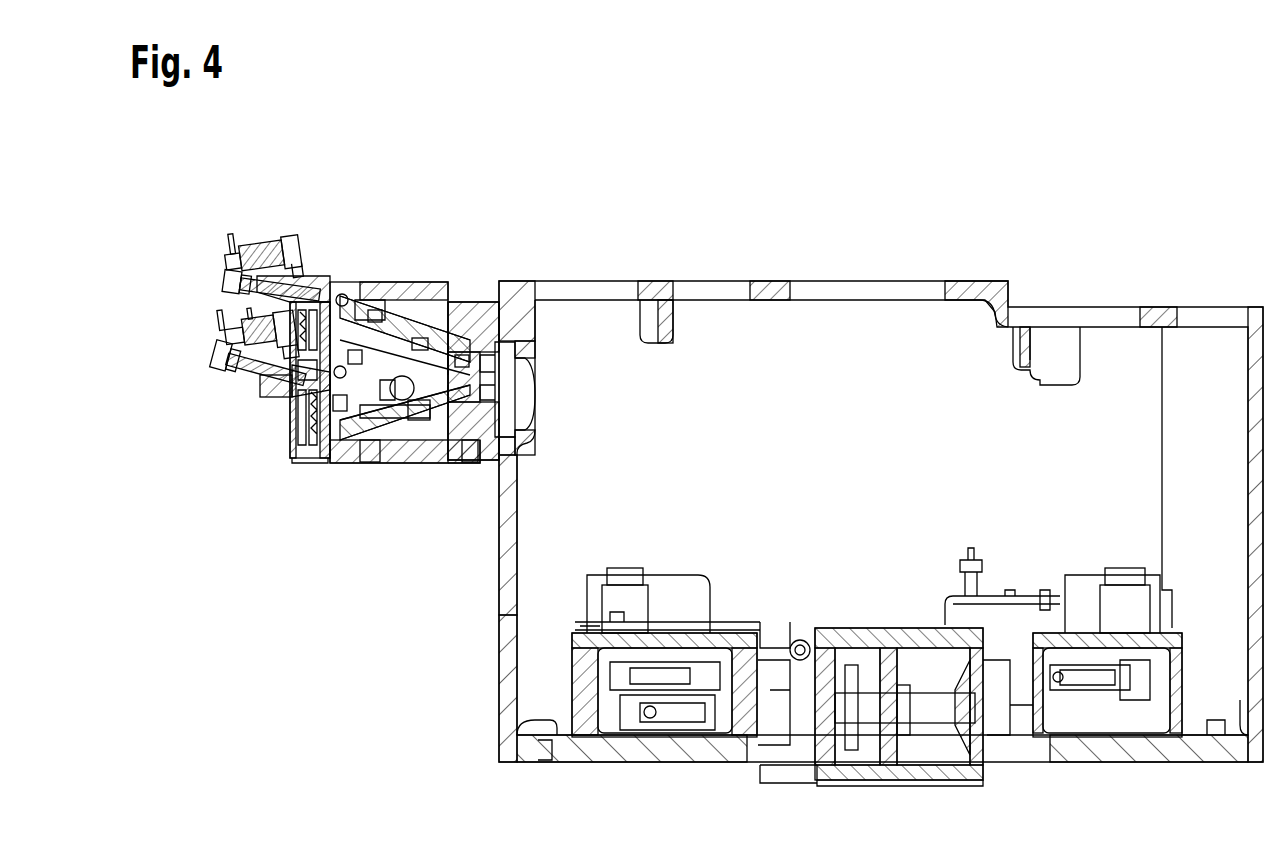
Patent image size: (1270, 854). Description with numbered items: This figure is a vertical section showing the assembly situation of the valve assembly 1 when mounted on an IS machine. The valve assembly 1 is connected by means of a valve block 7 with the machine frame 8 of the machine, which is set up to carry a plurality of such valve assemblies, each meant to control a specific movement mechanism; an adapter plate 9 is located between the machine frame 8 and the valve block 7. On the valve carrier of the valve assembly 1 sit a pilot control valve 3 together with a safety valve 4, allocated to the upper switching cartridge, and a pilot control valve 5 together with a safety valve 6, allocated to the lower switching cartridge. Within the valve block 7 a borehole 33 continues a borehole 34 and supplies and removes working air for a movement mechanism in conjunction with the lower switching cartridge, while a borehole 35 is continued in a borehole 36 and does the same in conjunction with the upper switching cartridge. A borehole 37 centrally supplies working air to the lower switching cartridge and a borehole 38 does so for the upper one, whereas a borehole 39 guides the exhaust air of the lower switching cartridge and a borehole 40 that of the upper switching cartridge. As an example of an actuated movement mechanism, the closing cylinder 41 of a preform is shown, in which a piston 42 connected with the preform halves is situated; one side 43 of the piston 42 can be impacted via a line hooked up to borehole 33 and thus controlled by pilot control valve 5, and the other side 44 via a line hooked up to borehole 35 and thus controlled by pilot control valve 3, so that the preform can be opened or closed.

The valve assembly 1 is at (297, 462).
The pilot control valve 3 is at (228, 247).
The safety valve 4 is at (212, 284).
The pilot control valve 5 is at (220, 327).
The safety valve 6 is at (212, 388).
The valve block 7 is at (397, 466).
The machine frame 8 is at (497, 684).
The adapter plate 9 is at (484, 298).
The borehole 33 is at (463, 440).
The borehole 34 is at (417, 412).
The borehole 35 is at (463, 363).
The borehole 36 is at (422, 347).
The borehole 37 is at (365, 440).
The borehole 38 is at (353, 357).
The borehole 39 is at (338, 405).
The borehole 40 is at (375, 317).
The closing cylinder 41 is at (937, 772).
The piston 42 is at (883, 762).
The side of piston 43 is at (848, 662).
The other side of piston 44 is at (913, 660).